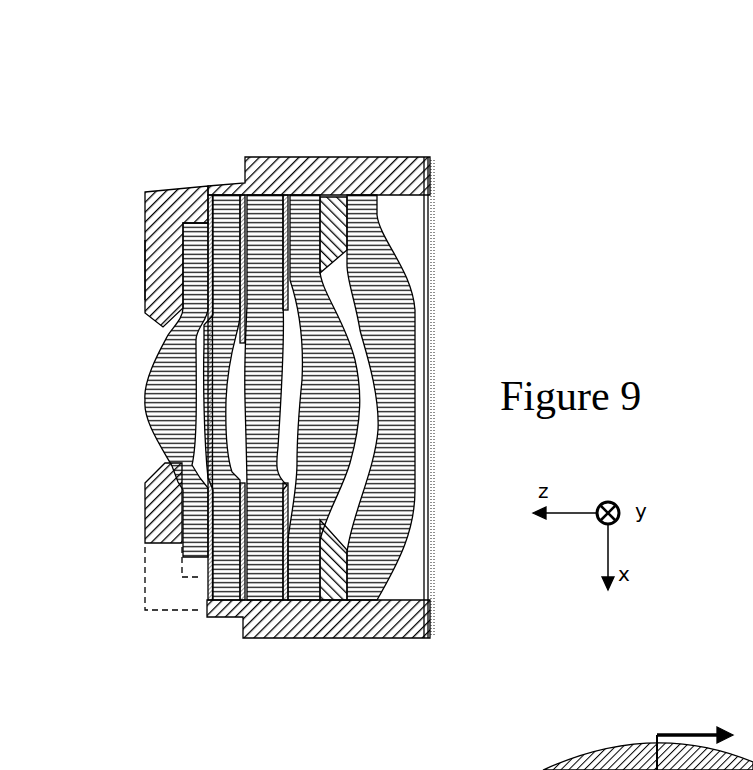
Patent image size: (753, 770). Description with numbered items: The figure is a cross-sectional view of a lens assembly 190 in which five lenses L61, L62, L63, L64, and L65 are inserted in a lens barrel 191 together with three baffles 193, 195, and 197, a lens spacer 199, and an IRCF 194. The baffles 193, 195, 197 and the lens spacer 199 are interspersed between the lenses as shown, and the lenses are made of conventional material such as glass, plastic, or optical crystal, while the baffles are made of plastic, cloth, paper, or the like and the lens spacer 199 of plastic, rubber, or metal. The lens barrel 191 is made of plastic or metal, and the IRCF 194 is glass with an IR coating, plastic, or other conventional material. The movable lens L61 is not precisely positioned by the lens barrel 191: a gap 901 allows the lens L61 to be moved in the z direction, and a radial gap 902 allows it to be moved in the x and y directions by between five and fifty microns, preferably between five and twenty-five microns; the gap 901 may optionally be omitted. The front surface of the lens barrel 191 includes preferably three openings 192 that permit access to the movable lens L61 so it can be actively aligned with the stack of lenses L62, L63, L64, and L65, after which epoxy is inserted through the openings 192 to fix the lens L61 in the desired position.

The lens assembly 190 is at (52, 186).
The lens barrel 191 is at (394, 157).
The openings 192 is at (163, 590).
The baffle 193 is at (212, 192).
The IRCF 194 is at (427, 327).
The baffle 195 is at (247, 157).
The baffle 197 is at (283, 157).
The lens spacer 199 is at (333, 157).
The gap 901 is at (160, 275).
The radial gap 902 is at (187, 203).
The movable lens L61 is at (193, 557).
The lens L62 is at (222, 590).
The lens L63 is at (257, 587).
The lens L64 is at (300, 587).
The lens L65 is at (362, 587).